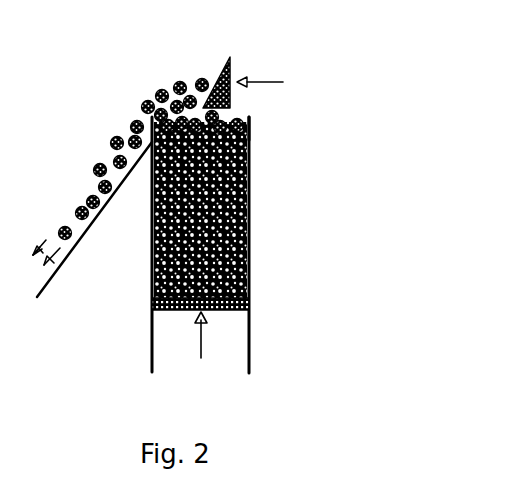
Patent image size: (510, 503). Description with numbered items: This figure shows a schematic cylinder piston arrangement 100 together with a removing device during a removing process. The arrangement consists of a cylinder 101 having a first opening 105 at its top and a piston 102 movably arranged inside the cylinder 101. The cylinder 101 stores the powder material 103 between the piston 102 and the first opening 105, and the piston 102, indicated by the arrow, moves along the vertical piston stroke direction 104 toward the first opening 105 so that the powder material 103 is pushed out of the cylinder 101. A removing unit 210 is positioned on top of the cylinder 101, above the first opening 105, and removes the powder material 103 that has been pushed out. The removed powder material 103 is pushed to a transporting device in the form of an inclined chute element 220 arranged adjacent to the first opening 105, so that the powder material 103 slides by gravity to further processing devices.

The cylinder piston arrangement 100 is at (343, 122).
The cylinder 101 is at (249, 285).
The piston 102 is at (240, 310).
The powder material 103 is at (249, 213).
The piston stroke direction 104 is at (276, 359).
The first opening 105 is at (294, 113).
The removing unit 210 is at (230, 57).
The chute element 220 is at (78, 240).